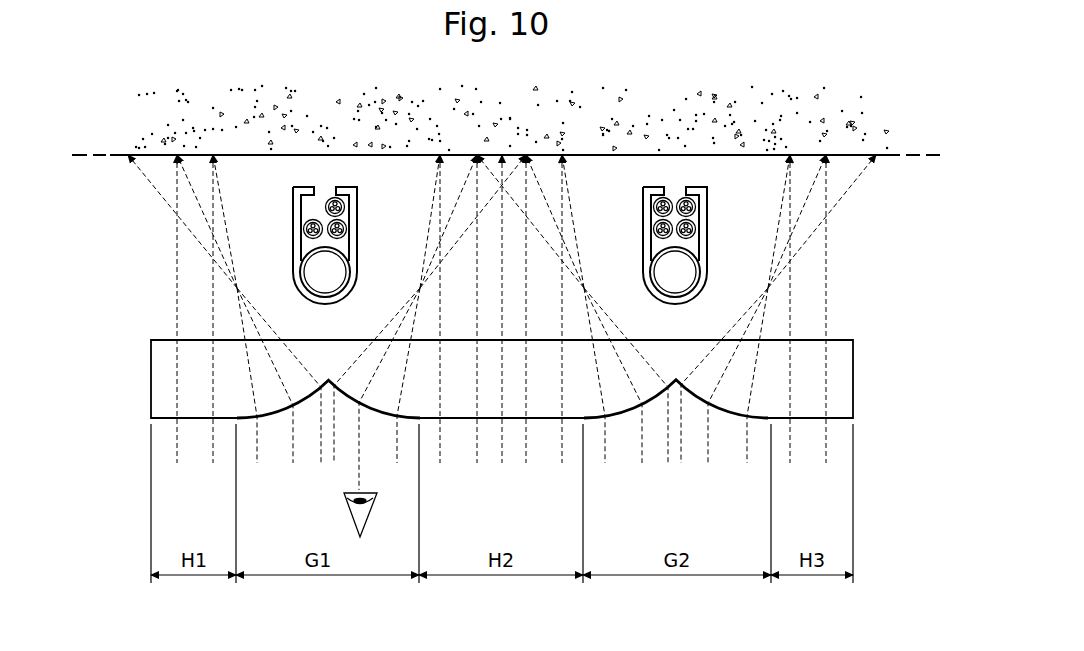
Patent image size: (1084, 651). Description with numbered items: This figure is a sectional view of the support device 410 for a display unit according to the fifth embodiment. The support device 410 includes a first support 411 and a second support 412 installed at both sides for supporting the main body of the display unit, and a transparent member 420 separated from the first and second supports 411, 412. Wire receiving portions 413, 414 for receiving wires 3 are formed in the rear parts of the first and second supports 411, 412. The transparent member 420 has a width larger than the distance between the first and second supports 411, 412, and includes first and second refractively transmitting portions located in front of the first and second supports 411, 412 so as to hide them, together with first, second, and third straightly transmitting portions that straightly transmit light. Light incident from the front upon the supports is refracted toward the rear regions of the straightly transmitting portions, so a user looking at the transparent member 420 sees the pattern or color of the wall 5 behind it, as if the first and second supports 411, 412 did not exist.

The wires 3 is at (347, 205).
The wall 5 is at (153, 156).
The support device 410 is at (455, 378).
The first support 411 is at (326, 238).
The second support 412 is at (676, 238).
The wire receiving portion 413 is at (314, 207).
The wire receiving portion 414 is at (664, 207).
The transparent member 420 is at (151, 365).